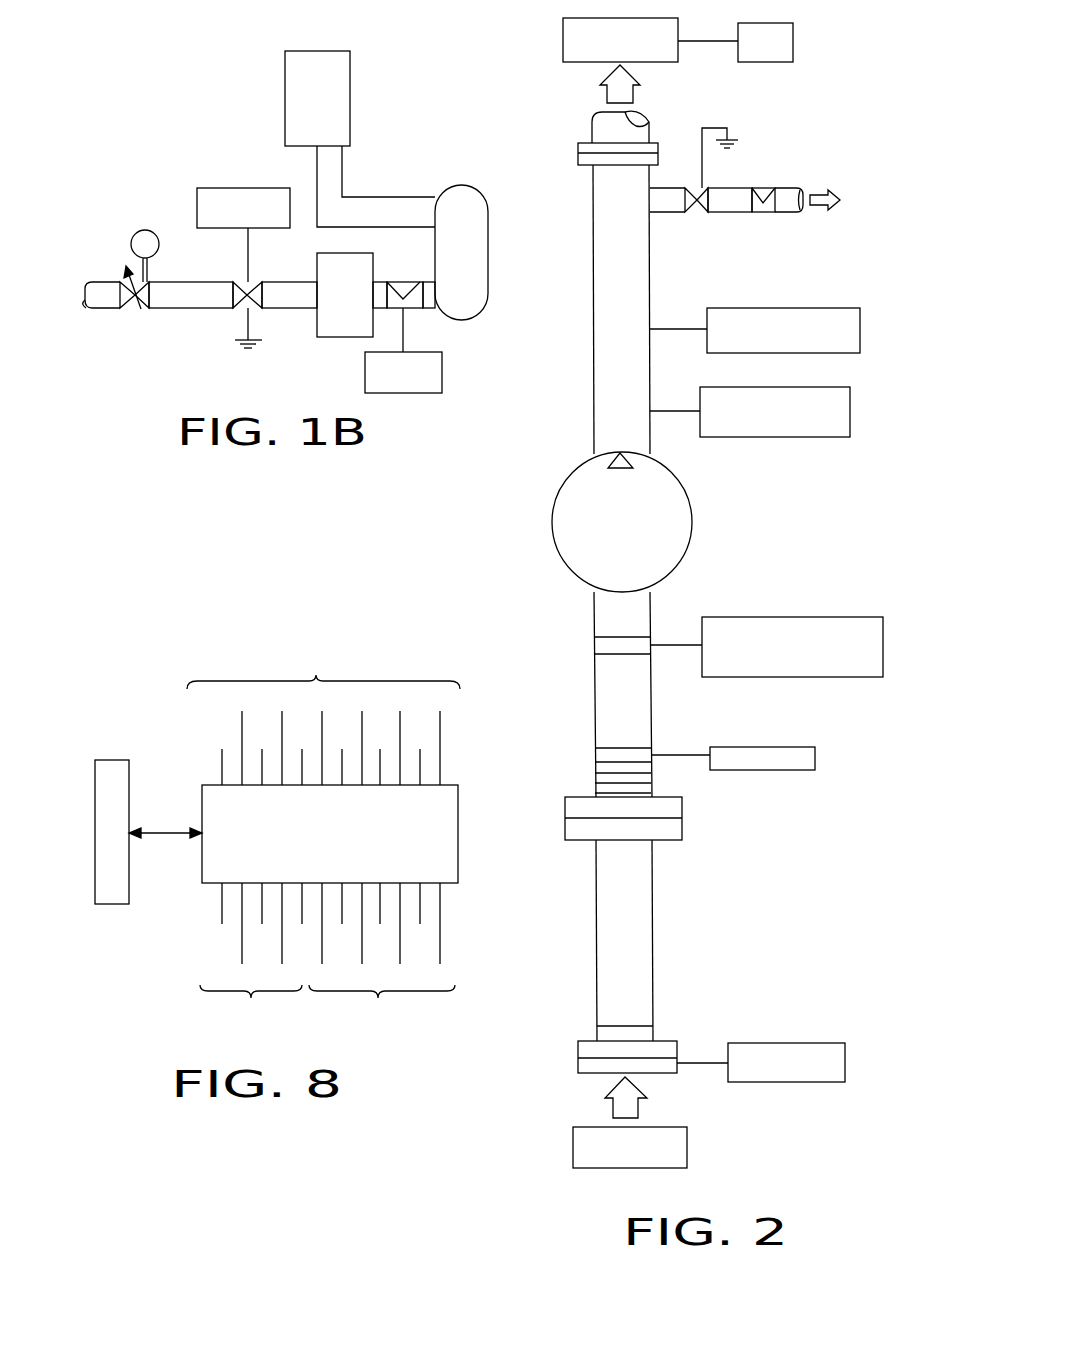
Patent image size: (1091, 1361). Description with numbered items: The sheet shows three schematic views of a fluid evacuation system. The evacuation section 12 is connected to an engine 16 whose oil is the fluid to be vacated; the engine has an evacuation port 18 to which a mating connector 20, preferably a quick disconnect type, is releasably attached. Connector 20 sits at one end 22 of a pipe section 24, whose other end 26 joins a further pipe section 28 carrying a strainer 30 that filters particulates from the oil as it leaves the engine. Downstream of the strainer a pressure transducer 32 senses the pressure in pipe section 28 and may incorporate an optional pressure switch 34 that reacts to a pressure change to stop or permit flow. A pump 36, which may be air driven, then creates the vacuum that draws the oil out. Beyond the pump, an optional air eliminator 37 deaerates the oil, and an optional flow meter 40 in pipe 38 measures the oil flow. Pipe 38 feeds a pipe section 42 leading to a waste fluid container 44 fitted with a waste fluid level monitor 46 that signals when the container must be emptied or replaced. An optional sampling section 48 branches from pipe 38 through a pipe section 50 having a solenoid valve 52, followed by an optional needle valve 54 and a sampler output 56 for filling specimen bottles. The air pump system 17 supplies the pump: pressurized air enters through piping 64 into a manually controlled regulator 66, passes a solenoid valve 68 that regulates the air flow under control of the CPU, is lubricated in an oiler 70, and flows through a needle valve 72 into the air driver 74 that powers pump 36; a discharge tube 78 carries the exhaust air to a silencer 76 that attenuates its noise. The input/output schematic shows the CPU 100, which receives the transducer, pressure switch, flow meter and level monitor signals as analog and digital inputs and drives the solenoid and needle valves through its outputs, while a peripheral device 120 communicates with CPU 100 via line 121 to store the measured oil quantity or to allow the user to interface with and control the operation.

In FIG. 1B, the air supply system 17 is at (180, 136).
In FIG. 1B, the piping 64 is at (100, 303).
In FIG. 1B, the regulator 66 is at (137, 240).
In FIG. 1B, the solenoid valve 68 is at (250, 310).
In FIG. 1B, the oiler 70 is at (317, 268).
In FIG. 1B, the needle valve 72 is at (400, 281).
In FIG. 1B, the air driver 74 is at (471, 190).
In FIG. 1B, the silencer 76 is at (345, 107).
In FIG. 1B, the discharge tube 78 is at (367, 203).
In FIG. 8, the CPU 100 is at (211, 862).
In FIG. 8, the peripheral device 120 is at (115, 759).
In FIG. 8, the line 121 is at (167, 829).
In FIG. 2, the evacuation section 12 is at (752, 512).
In FIG. 2, the engine 16 is at (680, 1150).
In FIG. 2, the evacuation port 18 is at (607, 1087).
In FIG. 2, the connector 20 is at (828, 1047).
In FIG. 2, the one end 22 is at (648, 1033).
In FIG. 2, the pipe section 24 is at (647, 935).
In FIG. 2, the other end 26 is at (682, 828).
In FIG. 2, the pipe section 28 is at (600, 712).
In FIG. 2, the strainer 30 is at (817, 757).
In FIG. 2, the pressure transducer 32 is at (837, 620).
In FIG. 2, the pressure switch 34 is at (733, 677).
In FIG. 2, the pump 36 is at (570, 547).
In FIG. 2, the air eliminator 37 is at (843, 415).
In FIG. 2, the pipe 38 is at (608, 355).
In FIG. 2, the flow meter 40 is at (837, 310).
In FIG. 2, the pipe section 42 is at (642, 132).
In FIG. 2, the waste fluid container 44 is at (567, 43).
In FIG. 2, the waste fluid level monitor 46 is at (797, 42).
In FIG. 2, the sampling section 48 is at (852, 120).
In FIG. 2, the pipe section 50 is at (670, 195).
In FIG. 2, the solenoid valve 52 is at (693, 203).
In FIG. 2, the needle valve 54 is at (767, 205).
In FIG. 2, the sampler output 56 is at (835, 195).